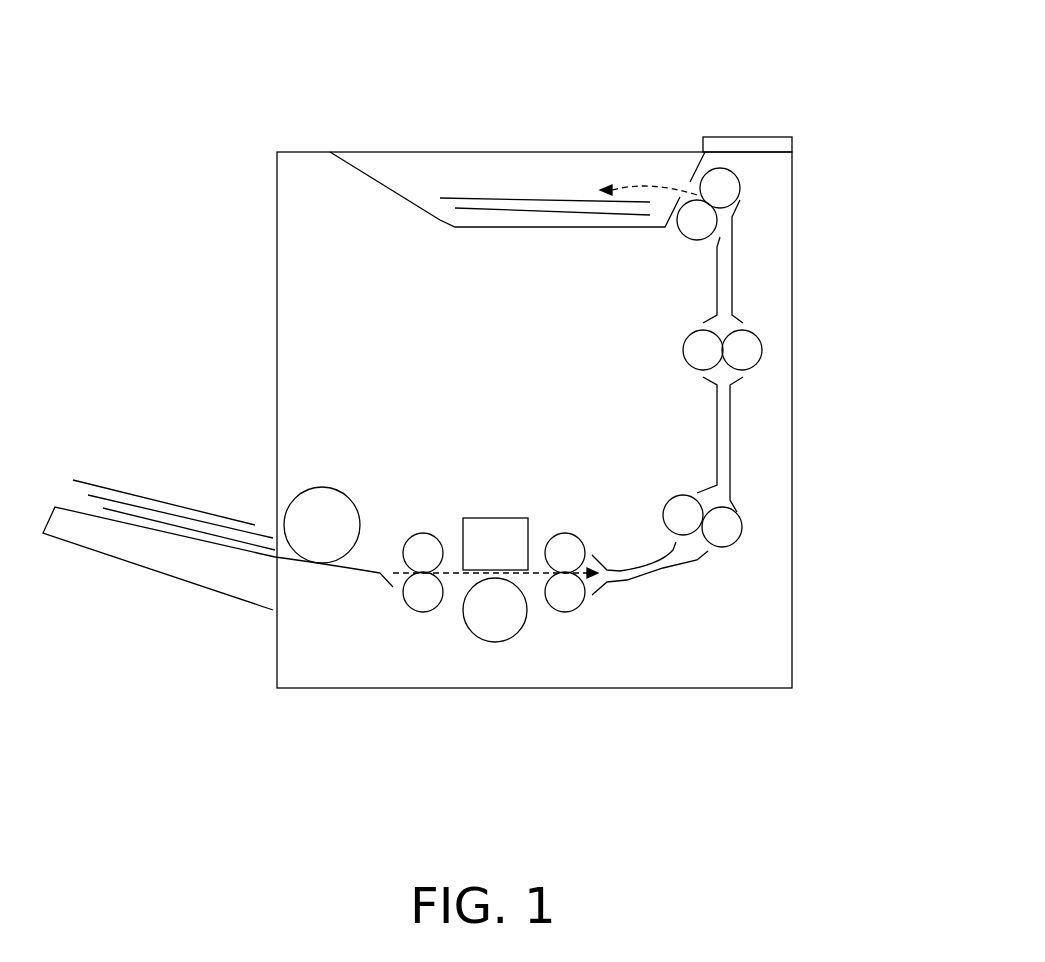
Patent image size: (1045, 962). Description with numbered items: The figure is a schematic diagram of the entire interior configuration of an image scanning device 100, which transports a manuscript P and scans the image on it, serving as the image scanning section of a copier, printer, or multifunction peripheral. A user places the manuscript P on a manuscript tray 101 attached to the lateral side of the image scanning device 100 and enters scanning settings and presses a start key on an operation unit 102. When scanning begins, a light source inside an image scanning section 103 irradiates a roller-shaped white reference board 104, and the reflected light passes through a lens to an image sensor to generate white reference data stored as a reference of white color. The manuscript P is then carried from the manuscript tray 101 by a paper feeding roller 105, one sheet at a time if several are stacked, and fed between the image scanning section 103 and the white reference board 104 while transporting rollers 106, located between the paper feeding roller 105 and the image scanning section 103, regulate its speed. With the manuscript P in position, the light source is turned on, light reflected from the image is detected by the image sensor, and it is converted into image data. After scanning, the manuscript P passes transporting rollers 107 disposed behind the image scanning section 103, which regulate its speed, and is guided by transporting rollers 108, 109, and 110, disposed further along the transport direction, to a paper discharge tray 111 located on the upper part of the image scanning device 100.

The image scanning device 100 is at (301, 115).
The manuscript tray 101 is at (93, 552).
The operation unit 102 is at (728, 143).
The image scanning section 103 is at (492, 530).
The white reference board 104 is at (478, 617).
The paper feeding roller 105 is at (320, 498).
The transporting rollers 106 is at (422, 547).
The transporting rollers 107 is at (563, 548).
The transporting rollers 108 is at (678, 510).
The transporting rollers 109 is at (693, 348).
The transporting rollers 110 is at (693, 228).
The paper discharge tray 111 is at (437, 222).
The manuscript P is at (488, 200).